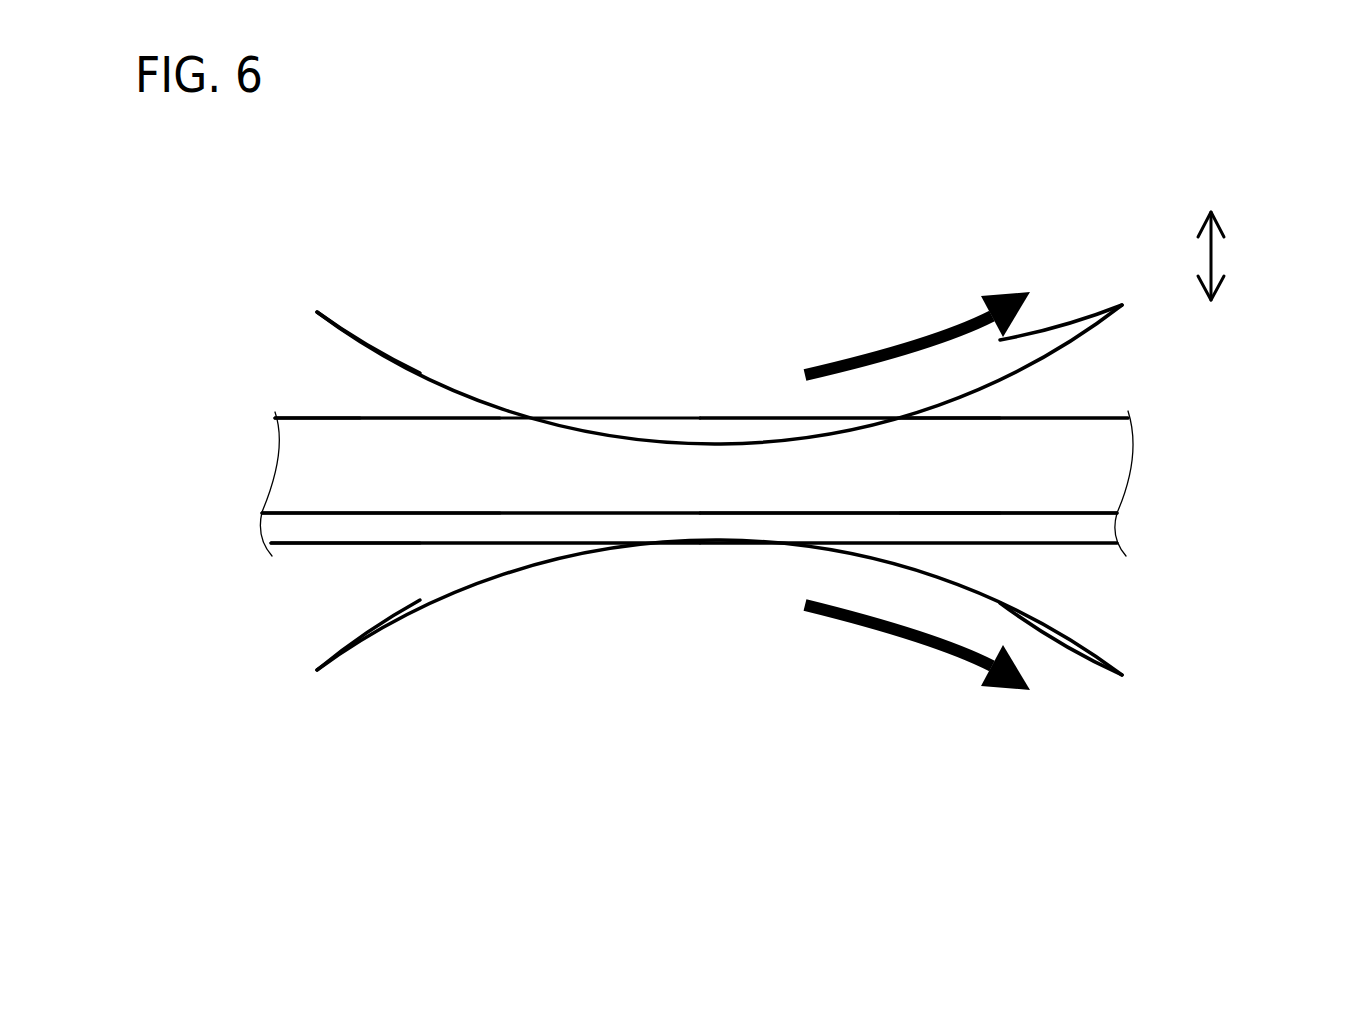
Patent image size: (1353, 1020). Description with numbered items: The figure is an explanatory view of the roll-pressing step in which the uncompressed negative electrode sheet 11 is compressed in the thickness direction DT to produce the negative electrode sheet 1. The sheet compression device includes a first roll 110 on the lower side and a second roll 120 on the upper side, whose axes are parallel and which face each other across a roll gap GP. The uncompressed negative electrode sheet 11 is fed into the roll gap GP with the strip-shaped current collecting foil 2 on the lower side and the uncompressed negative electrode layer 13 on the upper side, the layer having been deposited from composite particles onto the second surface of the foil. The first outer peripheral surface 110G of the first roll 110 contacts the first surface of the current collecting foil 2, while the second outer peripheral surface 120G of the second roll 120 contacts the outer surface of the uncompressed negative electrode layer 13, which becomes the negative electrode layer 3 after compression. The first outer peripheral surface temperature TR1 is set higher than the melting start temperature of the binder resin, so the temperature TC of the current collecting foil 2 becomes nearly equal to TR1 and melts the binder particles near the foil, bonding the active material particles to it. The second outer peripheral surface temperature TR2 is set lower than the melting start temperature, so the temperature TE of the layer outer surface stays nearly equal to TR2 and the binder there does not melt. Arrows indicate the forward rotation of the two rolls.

The negative electrode sheet 1 is at (1197, 442).
The current collecting foil 2 is at (297, 528).
The negative electrode layer 3 is at (1103, 456).
The uncompressed negative electrode sheet 11 is at (215, 440).
The uncompressed negative electrode layer 13 is at (298, 470).
The first roll 110 is at (717, 658).
The second roll 120 is at (715, 332).
The first outer peripheral surface 110G is at (1025, 603).
The second outer peripheral surface 120G is at (1053, 356).
The first outer peripheral surface temperature TR1 is at (340, 652).
The second outer peripheral surface temperature TR2 is at (362, 341).
The temperature of the negative-electrode-layer outer surface TE is at (350, 416).
The temperature of the current collecting foil TC is at (405, 545).
The roll gap GP is at (770, 472).
The thickness direction DT is at (1231, 256).